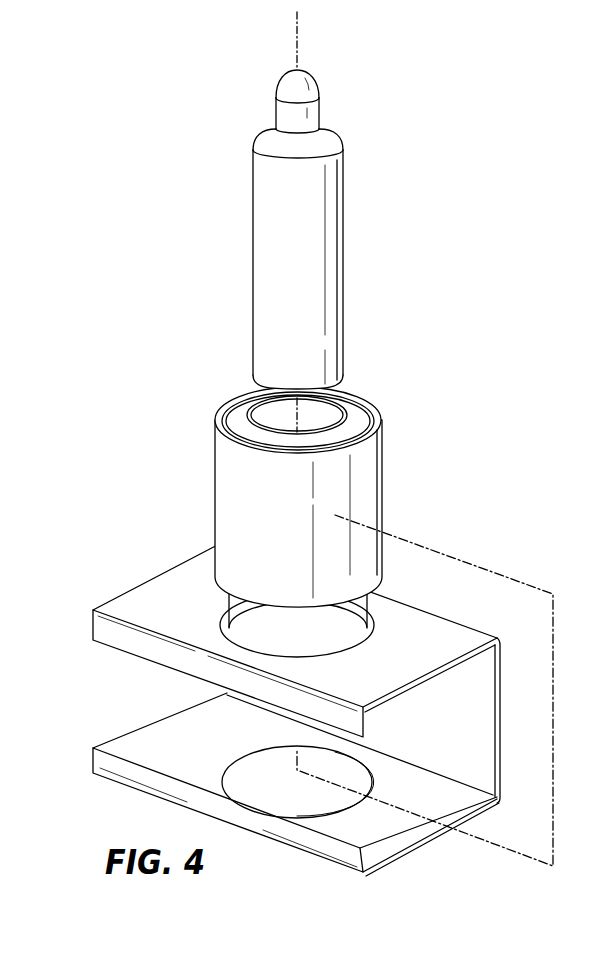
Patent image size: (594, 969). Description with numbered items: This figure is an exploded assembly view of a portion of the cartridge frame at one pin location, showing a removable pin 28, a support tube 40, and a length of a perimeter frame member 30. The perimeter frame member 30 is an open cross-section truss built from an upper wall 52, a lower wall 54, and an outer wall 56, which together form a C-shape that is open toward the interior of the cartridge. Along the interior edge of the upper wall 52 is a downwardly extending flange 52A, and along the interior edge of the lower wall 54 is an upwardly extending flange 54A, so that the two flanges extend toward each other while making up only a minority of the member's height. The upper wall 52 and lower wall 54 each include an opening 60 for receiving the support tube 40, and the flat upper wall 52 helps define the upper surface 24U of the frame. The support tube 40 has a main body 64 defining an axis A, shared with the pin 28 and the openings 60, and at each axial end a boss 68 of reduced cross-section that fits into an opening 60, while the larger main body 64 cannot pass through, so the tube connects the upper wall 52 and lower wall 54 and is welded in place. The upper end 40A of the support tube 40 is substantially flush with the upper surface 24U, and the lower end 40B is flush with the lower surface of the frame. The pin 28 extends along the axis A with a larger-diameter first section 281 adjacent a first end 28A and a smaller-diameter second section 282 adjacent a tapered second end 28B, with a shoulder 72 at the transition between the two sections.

The axis A is at (298, 42).
The upper surface 24U is at (420, 656).
The pin 28 is at (295, 216).
The first section 281 is at (258, 240).
The second section 282 is at (322, 111).
The first end 28A is at (252, 377).
The second end 28B is at (287, 86).
The perimeter frame member 30 is at (306, 700).
The support tube 40 is at (308, 474).
The upper end 40A is at (362, 418).
The lower end 40B is at (372, 600).
The upper wall 52 is at (290, 638).
The flange 52A is at (150, 648).
The lower wall 54 is at (284, 787).
The flange 54A is at (142, 760).
The outer wall 56 is at (470, 726).
The opening 60 is at (245, 752).
The main body 64 is at (235, 480).
The boss 68 is at (376, 411).
The shoulder 72 is at (263, 134).